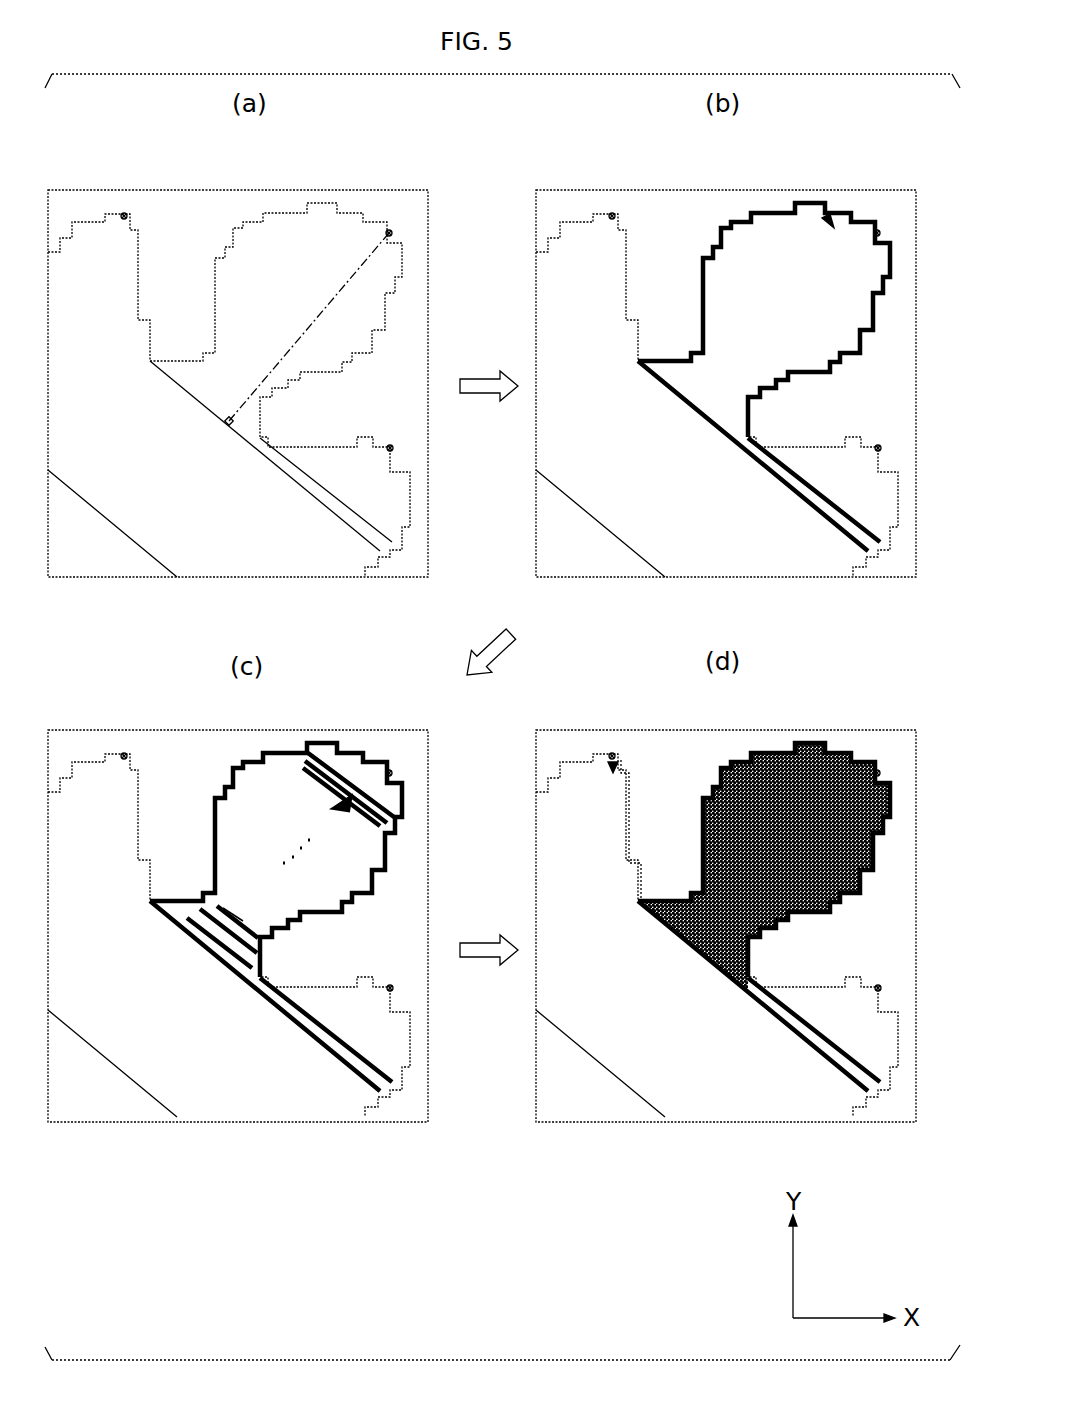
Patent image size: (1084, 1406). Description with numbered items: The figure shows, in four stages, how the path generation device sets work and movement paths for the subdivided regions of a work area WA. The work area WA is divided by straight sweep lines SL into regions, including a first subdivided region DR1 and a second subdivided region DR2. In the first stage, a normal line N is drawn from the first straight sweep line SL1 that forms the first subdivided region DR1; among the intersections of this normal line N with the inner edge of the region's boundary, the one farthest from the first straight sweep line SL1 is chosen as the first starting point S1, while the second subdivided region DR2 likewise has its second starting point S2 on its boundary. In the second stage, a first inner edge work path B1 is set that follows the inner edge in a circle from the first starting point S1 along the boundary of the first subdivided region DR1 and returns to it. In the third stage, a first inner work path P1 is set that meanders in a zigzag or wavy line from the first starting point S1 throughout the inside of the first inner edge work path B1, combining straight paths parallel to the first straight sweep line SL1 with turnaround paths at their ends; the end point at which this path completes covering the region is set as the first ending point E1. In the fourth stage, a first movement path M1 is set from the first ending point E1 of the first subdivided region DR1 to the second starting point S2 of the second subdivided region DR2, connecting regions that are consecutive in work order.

The first starting point S1 is at (389, 231).
The second starting point S2 is at (124, 213).
The work area WA is at (329, 192).
The normal line N is at (356, 276).
The straight sweep line SL is at (373, 525).
The first straight sweep line SL1 is at (331, 508).
The first subdivided region DR1 is at (473, 660).
The second subdivided region DR2 is at (482, 656).
The first inner edge work path B1 is at (706, 297).
The first ending point E1 is at (247, 985).
The first inner work path P1 is at (345, 888).
The first movement path M1 is at (663, 903).